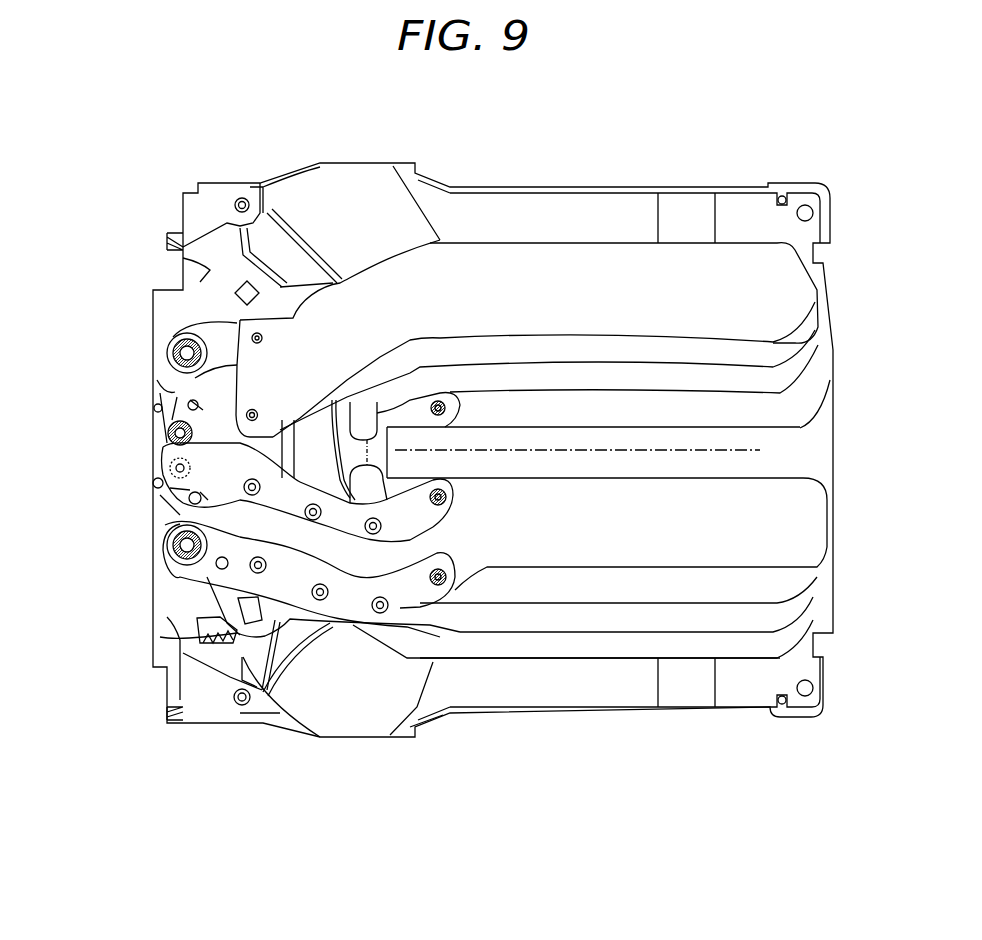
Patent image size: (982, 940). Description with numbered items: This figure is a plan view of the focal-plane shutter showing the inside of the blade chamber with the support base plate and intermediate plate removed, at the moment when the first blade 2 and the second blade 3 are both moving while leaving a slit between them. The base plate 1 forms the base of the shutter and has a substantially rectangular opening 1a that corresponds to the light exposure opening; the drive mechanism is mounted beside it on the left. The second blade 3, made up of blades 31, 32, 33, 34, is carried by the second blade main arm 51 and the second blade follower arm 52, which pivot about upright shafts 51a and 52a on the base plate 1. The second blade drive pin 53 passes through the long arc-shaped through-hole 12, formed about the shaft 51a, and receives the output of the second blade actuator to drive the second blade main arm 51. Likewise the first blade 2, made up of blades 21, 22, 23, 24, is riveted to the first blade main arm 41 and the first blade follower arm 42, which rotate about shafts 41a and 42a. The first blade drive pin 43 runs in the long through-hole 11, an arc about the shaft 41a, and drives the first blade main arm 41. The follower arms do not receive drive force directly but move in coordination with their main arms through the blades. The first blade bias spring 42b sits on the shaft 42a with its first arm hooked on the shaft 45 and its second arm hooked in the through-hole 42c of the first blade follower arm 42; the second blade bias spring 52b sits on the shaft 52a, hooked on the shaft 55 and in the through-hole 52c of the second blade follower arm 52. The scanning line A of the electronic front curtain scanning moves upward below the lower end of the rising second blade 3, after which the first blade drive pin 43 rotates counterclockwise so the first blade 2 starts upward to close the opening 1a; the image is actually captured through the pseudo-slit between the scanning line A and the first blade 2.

The base plate 1 is at (813, 247).
The opening 1a is at (388, 478).
The first blade 2 is at (640, 640).
The second blade 3 is at (634, 296).
The long through-hole 11 is at (225, 622).
The long through-hole 12 is at (200, 255).
The blade 21 is at (790, 637).
The blade 22 is at (803, 600).
The blade 23 is at (797, 575).
The blade 24 is at (810, 508).
The blade 31 is at (815, 383).
The blade 32 is at (815, 353).
The blade 33 is at (813, 325).
The blade 34 is at (800, 283).
The first blade main arm 41 is at (237, 587).
The shaft 41a is at (173, 543).
The first blade follower arm 42 is at (157, 450).
The shaft 42a is at (157, 467).
The first blade bias spring 42b is at (157, 492).
The through-hole 42c is at (180, 510).
The first blade drive pin 43 is at (250, 615).
The shaft 45 is at (157, 480).
The second blade main arm 51 is at (280, 297).
The shaft 51a is at (173, 347).
The second blade follower arm 52 is at (180, 352).
The shaft 52a is at (157, 433).
The second blade bias spring 52b is at (157, 400).
The through-hole 52c is at (167, 380).
The second blade drive pin 53 is at (247, 283).
The shaft 55 is at (154, 408).
The scanning line A is at (760, 455).